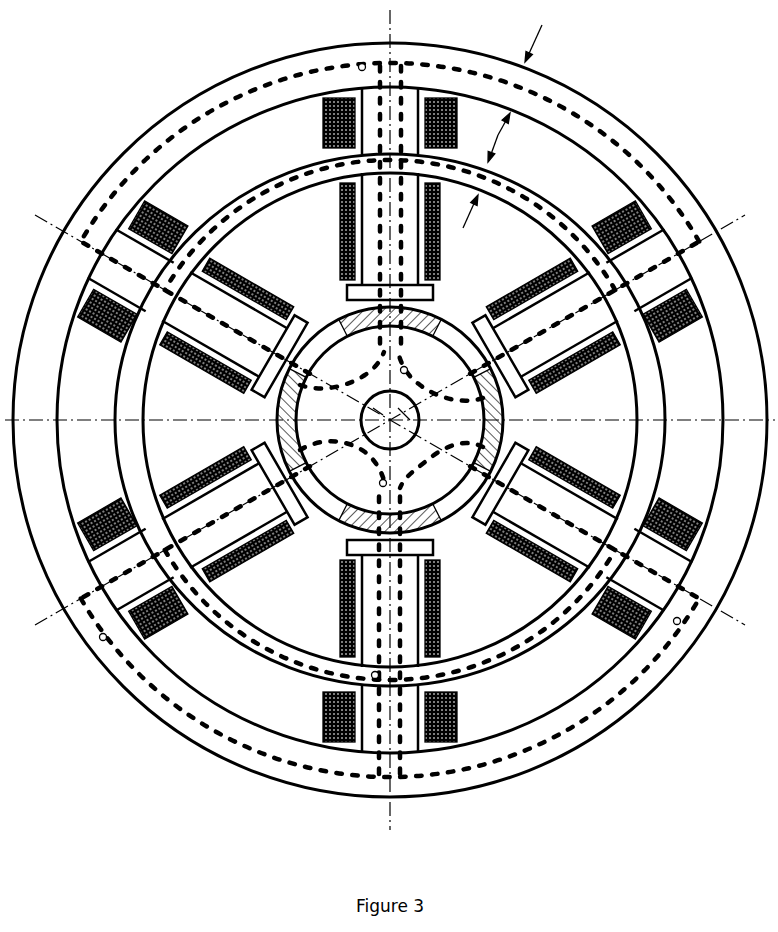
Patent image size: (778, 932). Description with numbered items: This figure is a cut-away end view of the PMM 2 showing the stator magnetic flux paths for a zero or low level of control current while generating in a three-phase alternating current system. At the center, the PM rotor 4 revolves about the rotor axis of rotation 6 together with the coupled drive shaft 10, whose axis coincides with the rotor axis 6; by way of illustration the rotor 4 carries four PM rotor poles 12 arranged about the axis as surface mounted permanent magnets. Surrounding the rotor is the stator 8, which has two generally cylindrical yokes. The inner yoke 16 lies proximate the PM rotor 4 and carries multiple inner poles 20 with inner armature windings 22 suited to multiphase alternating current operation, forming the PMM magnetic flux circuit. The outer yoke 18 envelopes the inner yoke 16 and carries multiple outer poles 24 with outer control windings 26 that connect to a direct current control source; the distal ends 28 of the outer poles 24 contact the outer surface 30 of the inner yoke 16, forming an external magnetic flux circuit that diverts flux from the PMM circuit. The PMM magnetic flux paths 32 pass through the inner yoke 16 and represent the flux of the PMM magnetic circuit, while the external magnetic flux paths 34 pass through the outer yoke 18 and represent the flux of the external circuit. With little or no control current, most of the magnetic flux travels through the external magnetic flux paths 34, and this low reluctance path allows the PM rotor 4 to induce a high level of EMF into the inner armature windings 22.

The PMM 2 is at (94, 72).
The PM rotor 4 is at (390, 420).
The rotor axis of rotation 6 is at (395, 418).
The stator 8 is at (634, 118).
The drive shaft 10 is at (378, 450).
The PM rotor poles 12 is at (436, 428).
The inner yoke 16 is at (390, 420).
The outer yoke 18 is at (406, 420).
The inner poles 20 is at (390, 420).
The inner armature windings 22 is at (341, 218).
The outer poles 24 is at (390, 420).
The outer control windings 26 is at (323, 105).
The distal ends 28 is at (103, 640).
The outer surface 30 is at (482, 677).
The PMM magnetic flux paths 32 is at (245, 207).
The external magnetic flux paths 34 is at (150, 162).